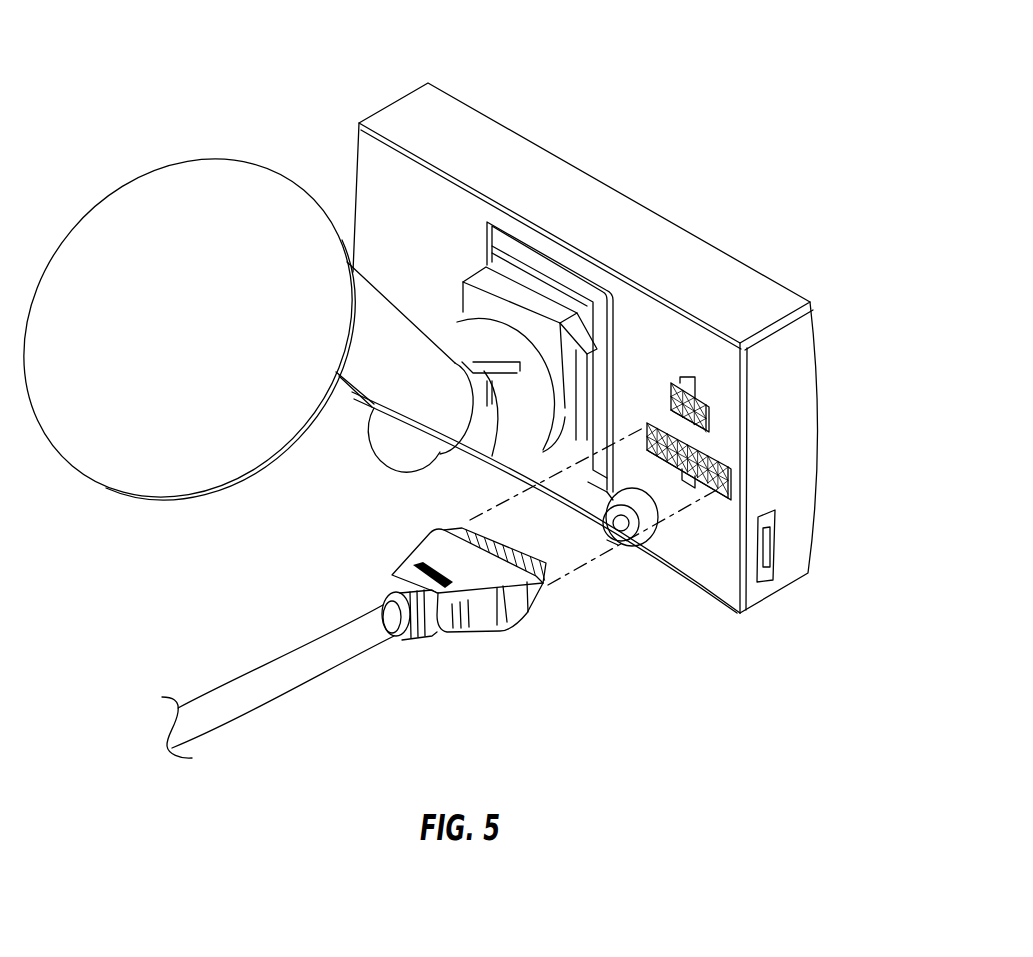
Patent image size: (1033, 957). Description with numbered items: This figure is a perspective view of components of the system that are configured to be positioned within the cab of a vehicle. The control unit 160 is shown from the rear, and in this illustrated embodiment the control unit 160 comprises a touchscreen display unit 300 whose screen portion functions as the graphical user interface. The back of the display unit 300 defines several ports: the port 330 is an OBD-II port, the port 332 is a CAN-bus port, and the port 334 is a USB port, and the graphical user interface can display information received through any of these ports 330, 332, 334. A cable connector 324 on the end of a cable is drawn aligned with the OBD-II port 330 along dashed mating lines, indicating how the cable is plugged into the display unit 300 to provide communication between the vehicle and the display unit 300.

The control unit 160 is at (664, 147).
The touchscreen display unit 300 is at (725, 288).
The cable connector 324 is at (476, 632).
The OBD-II port 330 is at (735, 481).
The CAN-bus port 332 is at (723, 417).
The USB port 334 is at (767, 591).